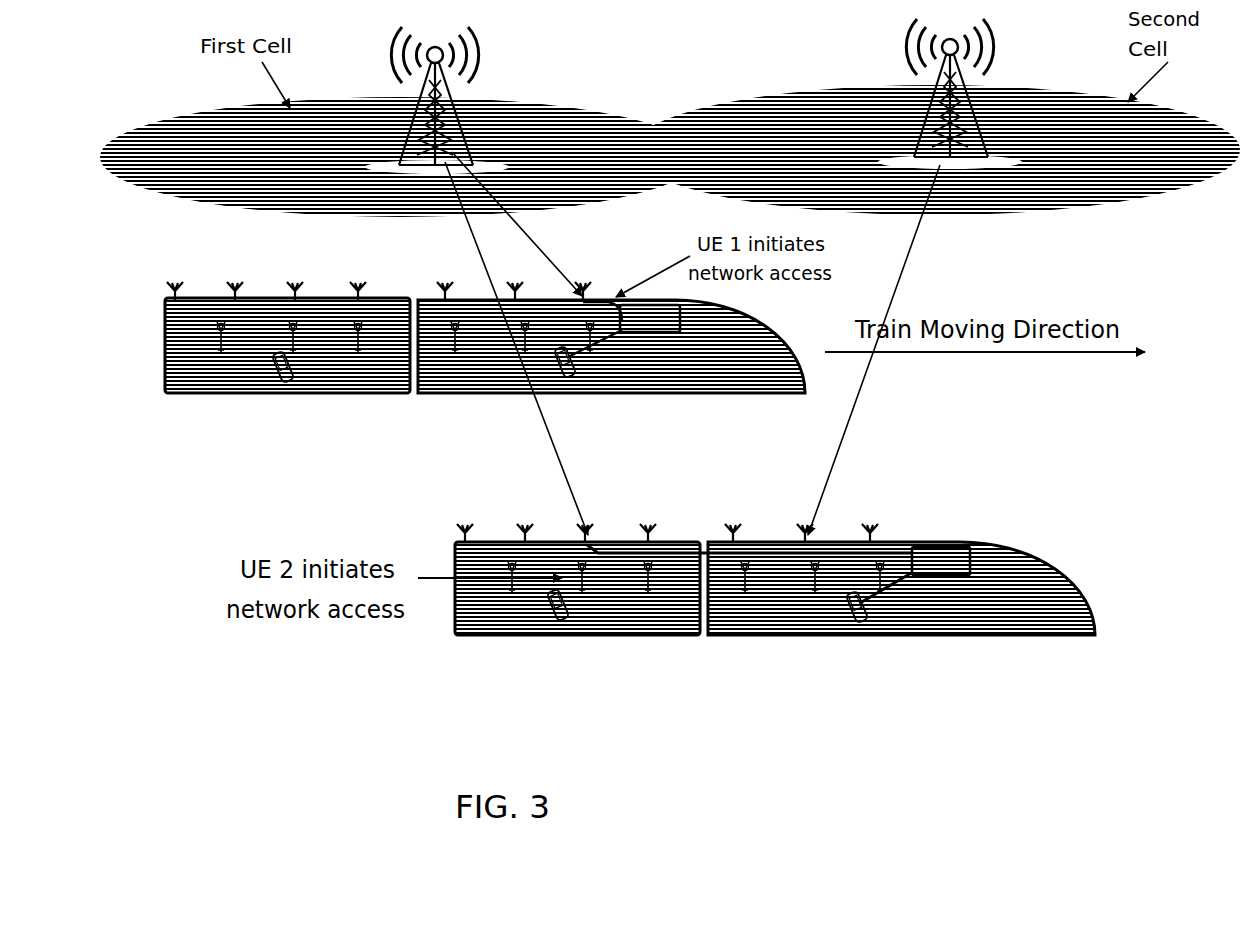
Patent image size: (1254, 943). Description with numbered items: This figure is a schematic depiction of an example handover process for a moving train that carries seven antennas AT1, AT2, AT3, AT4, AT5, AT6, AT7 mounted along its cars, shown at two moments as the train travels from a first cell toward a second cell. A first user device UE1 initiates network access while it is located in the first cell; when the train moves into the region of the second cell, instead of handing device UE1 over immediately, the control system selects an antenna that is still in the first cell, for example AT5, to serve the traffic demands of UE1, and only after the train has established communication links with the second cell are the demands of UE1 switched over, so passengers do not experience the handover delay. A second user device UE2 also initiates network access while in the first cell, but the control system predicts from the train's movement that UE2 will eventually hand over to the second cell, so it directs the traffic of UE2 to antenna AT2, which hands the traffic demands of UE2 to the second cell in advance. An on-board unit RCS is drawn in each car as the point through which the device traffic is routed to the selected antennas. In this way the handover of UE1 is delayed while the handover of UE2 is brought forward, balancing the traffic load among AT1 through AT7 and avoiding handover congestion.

The antenna AT1 is at (595, 270).
The antenna AT2 is at (520, 270).
The antenna AT3 is at (441, 270).
The antenna AT4 is at (367, 269).
The antenna AT5 is at (301, 269).
The antenna AT6 is at (236, 269).
The antenna AT7 is at (174, 269).
The first user device UE1 is at (588, 366).
The user device UE2 is at (308, 369).
The radio communication system RCS is at (650, 318).